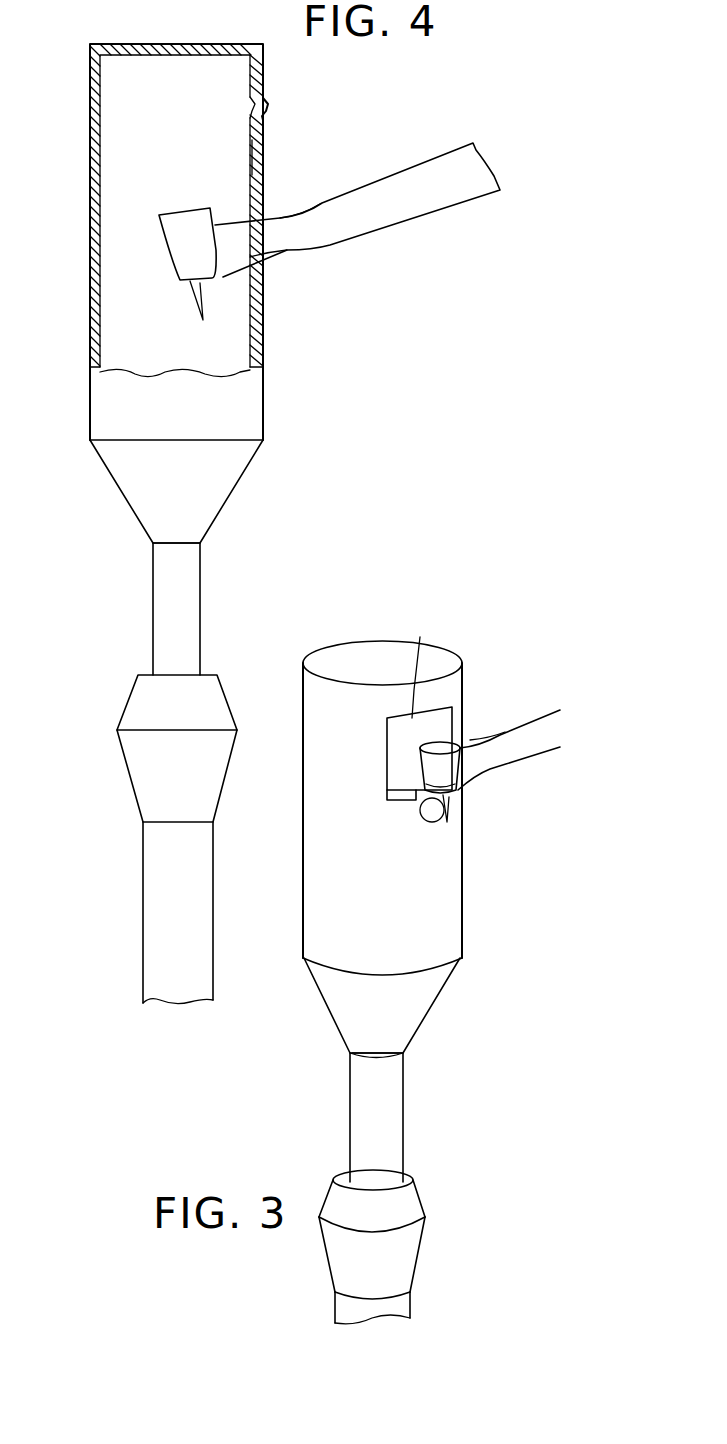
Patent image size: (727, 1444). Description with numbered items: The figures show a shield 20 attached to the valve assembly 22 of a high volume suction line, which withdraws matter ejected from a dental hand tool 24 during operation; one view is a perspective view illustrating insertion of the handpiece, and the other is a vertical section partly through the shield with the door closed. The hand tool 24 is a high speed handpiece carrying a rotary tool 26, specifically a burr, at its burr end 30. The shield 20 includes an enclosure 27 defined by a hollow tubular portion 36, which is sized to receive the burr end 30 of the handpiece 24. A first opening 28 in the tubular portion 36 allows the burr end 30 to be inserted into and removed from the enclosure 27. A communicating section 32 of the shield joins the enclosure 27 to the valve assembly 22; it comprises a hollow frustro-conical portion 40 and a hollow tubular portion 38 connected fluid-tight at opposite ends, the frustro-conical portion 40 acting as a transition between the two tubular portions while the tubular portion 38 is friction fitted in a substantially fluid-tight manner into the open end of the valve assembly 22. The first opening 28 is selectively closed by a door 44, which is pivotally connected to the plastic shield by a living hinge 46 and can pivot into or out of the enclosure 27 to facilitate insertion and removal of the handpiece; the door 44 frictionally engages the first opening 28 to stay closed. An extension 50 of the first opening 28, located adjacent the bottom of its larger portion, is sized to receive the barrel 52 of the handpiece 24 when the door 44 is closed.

In FIG. 4, the shield 20 is at (65, 70).
In FIG. 3, the shield 20 is at (328, 630).
In FIG. 4, the valve assembly 22 is at (118, 791).
In FIG. 3, the valve assembly 22 is at (441, 1201).
In FIG. 4, the hand tool 24 is at (363, 180).
In FIG. 3, the hand tool 24 is at (512, 779).
In FIG. 4, the rotary tool 26 is at (198, 302).
In FIG. 4, the enclosure 27 is at (138, 135).
In FIG. 3, the first opening 28 is at (405, 798).
In FIG. 4, the burr end 30 is at (172, 233).
In FIG. 3, the burr end 30 is at (440, 767).
In FIG. 4, the communicating section 32 is at (242, 520).
In FIG. 3, the communicating section 32 is at (430, 1043).
In FIG. 4, the tubular portion 36 is at (92, 190).
In FIG. 3, the tubular portion 36 is at (305, 920).
In FIG. 4, the tubular portion 38 is at (165, 640).
In FIG. 3, the tubular portion 38 is at (363, 1103).
In FIG. 4, the frustro-conical portion 40 is at (130, 503).
In FIG. 3, the frustro-conical portion 40 is at (432, 1005).
In FIG. 4, the door 44 is at (252, 155).
In FIG. 3, the door 44 is at (400, 745).
In FIG. 4, the living hinge 46 is at (269, 108).
In FIG. 3, the living hinge 46 is at (423, 659).
In FIG. 4, the extension 50 is at (263, 262).
In FIG. 3, the extension 50 is at (435, 822).
In FIG. 4, the barrel 52 is at (282, 218).
In FIG. 3, the barrel 52 is at (476, 746).